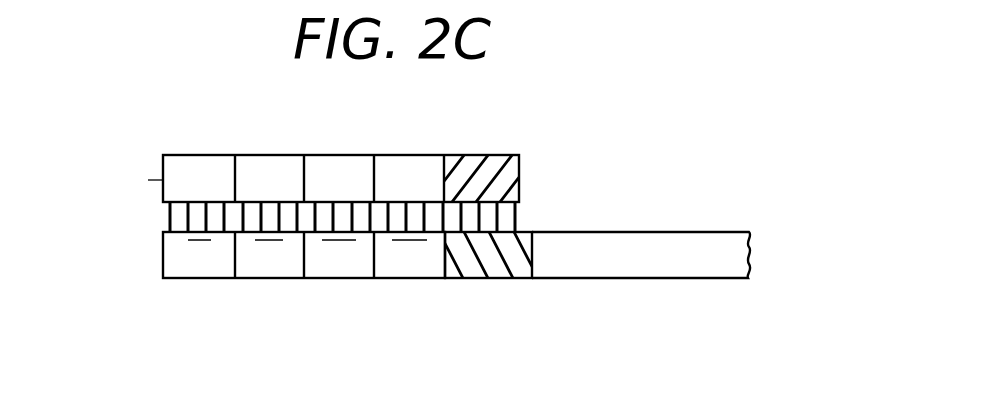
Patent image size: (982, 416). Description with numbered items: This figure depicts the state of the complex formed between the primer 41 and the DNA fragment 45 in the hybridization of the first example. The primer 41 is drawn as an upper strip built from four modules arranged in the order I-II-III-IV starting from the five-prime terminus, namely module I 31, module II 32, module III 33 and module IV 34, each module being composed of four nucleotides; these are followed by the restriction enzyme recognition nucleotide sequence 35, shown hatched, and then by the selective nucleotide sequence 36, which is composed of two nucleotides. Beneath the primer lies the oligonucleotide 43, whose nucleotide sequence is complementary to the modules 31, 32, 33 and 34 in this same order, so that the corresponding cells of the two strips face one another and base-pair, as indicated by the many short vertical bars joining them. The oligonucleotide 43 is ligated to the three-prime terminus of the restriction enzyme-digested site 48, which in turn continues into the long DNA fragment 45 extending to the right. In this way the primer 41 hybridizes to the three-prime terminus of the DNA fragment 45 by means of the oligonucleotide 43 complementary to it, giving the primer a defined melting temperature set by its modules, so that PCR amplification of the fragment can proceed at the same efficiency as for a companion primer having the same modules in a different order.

The module I 31 is at (167, 152).
The module II 32 is at (238, 152).
The module III 33 is at (308, 152).
The module IV 34 is at (378, 152).
The restriction enzyme recognition nucleotide sequence 35 is at (449, 152).
The selective nucleotide sequence 36 is at (533, 152).
The primer 41 is at (398, 150).
The oligonucleotide 43 is at (167, 288).
The DNA fragment 45 is at (760, 252).
The restriction enzyme-digested site 48 is at (450, 288).